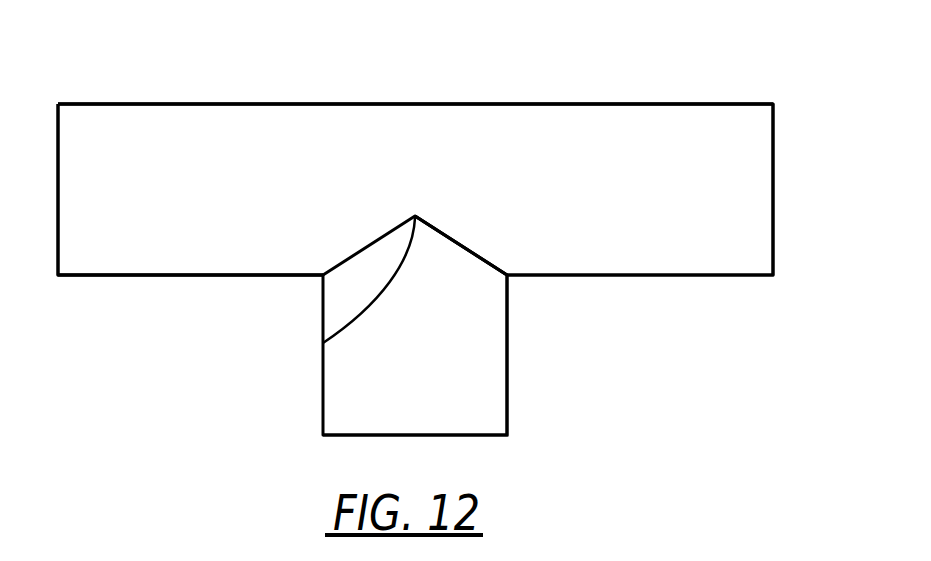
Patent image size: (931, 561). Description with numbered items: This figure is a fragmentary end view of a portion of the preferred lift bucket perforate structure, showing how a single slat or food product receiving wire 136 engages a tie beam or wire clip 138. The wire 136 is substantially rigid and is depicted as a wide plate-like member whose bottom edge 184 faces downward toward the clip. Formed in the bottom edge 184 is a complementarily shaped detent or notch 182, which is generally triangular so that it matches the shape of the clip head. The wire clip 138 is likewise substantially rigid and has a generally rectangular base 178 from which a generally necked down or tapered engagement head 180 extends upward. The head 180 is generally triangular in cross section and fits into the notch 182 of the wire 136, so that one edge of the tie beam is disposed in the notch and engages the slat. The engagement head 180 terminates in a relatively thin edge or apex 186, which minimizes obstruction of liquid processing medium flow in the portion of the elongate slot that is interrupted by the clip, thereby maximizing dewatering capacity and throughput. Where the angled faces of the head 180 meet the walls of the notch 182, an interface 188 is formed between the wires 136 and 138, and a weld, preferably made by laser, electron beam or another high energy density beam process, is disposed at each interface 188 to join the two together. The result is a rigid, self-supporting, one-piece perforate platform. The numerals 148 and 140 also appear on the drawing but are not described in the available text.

The slat 136 is at (100, 104).
The top surface of plate 148 is at (226, 104).
The plate body 140 is at (288, 133).
The bottom edge 184 is at (137, 278).
The base 178 is at (462, 368).
The tie beam 138 is at (513, 423).
The notch 182 is at (443, 223).
The interface 188 is at (487, 250).
The engagement head 180 is at (428, 240).
The apex 186 is at (323, 343).